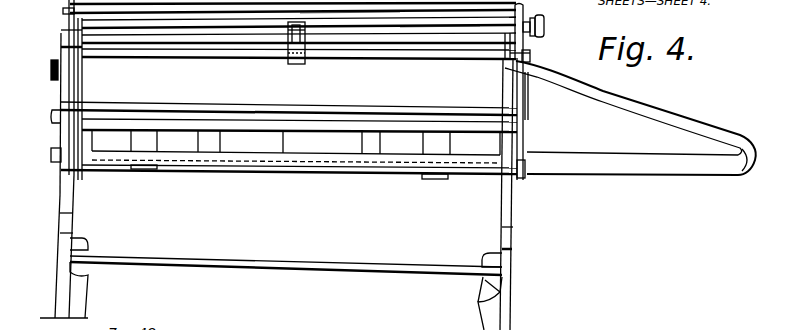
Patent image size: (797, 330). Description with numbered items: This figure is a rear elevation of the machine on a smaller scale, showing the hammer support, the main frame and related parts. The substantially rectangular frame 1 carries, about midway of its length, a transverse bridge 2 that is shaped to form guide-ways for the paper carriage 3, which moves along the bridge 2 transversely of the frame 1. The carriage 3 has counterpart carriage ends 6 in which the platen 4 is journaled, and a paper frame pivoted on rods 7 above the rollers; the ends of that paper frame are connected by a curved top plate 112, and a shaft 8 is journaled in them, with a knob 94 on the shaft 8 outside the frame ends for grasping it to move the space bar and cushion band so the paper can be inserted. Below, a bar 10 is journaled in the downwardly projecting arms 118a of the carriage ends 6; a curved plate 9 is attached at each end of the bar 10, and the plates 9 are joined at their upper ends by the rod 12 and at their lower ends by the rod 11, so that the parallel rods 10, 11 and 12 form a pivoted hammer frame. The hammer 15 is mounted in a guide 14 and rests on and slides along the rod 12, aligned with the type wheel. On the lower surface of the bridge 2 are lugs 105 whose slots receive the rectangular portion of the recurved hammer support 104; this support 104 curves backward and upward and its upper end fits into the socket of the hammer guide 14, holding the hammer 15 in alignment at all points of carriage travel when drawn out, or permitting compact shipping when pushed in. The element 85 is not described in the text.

The frame 1 is at (60, 241).
The bridge 2 is at (176, 118).
The paper carriage 3 is at (113, 109).
The platen 4 is at (293, 44).
The carriage ends 6 is at (58, 91).
The rods 7 is at (103, 42).
The shaft 8 is at (358, 17).
The curved plates 9 is at (58, 138).
The bar 10 is at (243, 158).
The rod 11 is at (268, 172).
The rod 12 is at (418, 40).
The hammer guide 14 is at (287, 30).
The hammer 15 is at (292, 35).
The slat 85 is at (145, 145).
The knob 94 is at (546, 25).
The recurved hammer support 104 is at (468, 63).
The lugs 105 is at (212, 152).
The curved top plate 112 is at (45, 14).
The downwardly projecting arms 118a is at (535, 186).